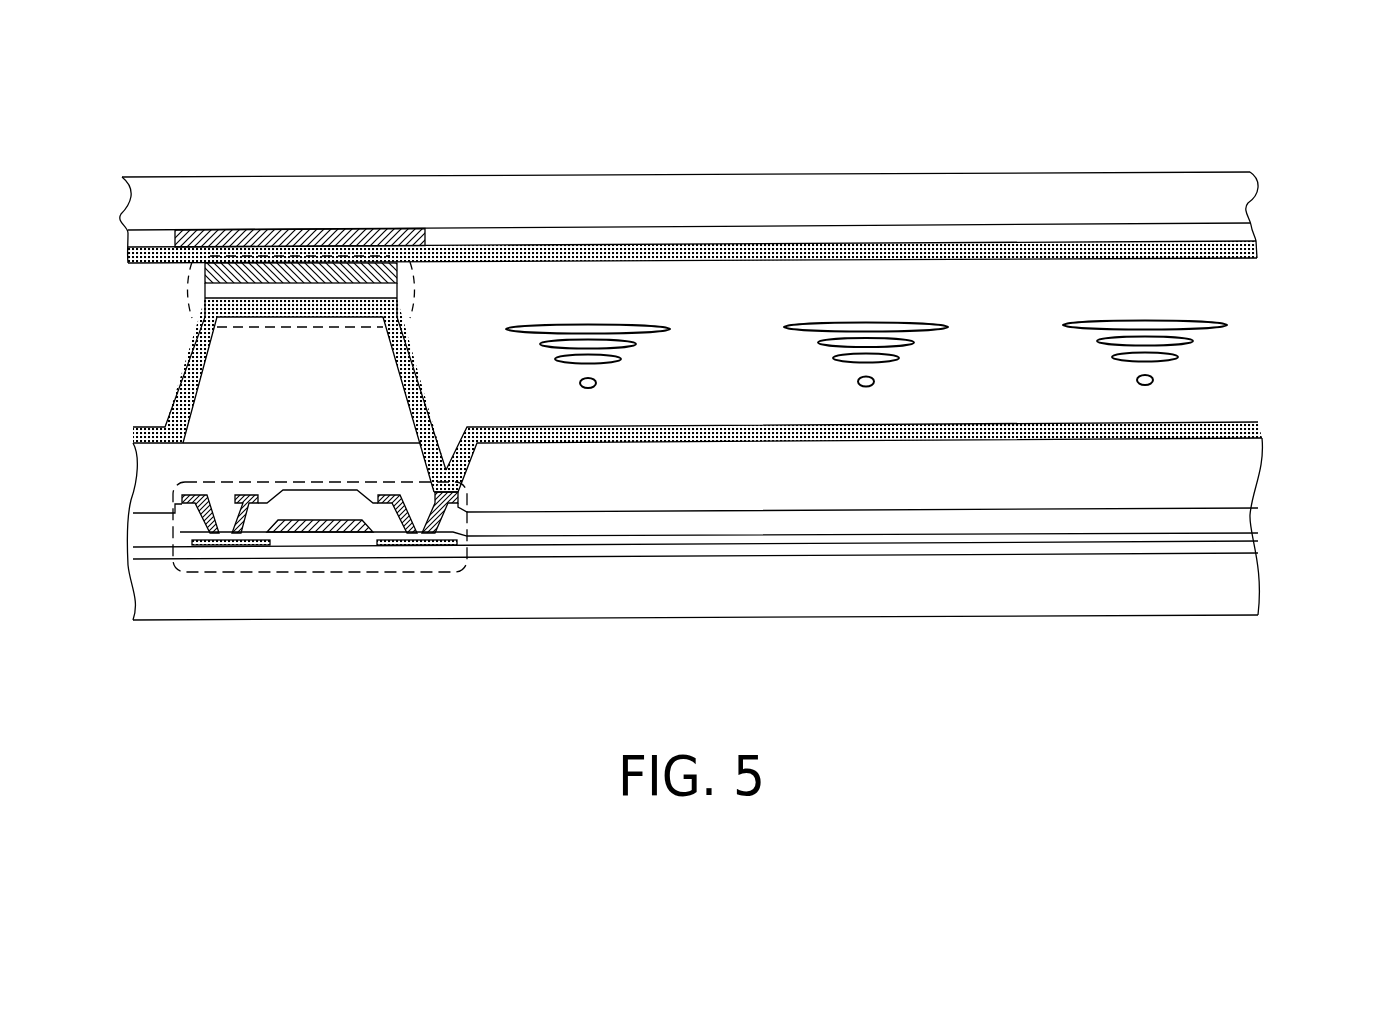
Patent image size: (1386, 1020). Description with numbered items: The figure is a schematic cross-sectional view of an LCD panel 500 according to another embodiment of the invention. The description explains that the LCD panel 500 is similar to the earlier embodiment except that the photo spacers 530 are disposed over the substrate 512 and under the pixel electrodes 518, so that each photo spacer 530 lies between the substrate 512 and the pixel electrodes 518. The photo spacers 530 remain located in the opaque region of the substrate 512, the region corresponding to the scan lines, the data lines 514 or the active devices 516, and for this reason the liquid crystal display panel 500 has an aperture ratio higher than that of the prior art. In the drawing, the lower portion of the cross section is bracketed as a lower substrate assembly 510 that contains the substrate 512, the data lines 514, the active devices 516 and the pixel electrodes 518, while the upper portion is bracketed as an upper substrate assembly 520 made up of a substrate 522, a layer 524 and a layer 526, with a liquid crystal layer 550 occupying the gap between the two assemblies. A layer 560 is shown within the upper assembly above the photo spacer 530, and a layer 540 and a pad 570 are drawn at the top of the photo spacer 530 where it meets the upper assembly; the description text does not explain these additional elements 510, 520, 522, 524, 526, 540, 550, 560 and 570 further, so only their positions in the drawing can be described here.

The LCD panel 500 is at (1255, 668).
The thin film transistor array substrate 510 is at (1279, 422).
The substrate 512 is at (861, 592).
The data lines 514 is at (196, 516).
The active devices 516 is at (330, 574).
The pixel electrodes 518 is at (711, 432).
The color filter substrate 520 is at (1279, 172).
The substrate 522 is at (1112, 195).
The common electrode 524 is at (980, 244).
The color filter layer 526 is at (147, 240).
The photo spacers 530 is at (214, 395).
The conductive layer 540 is at (213, 289).
The liquid crystal layer 550 is at (1279, 258).
The black matrix 560 is at (260, 250).
The conductive pad 570 is at (210, 270).